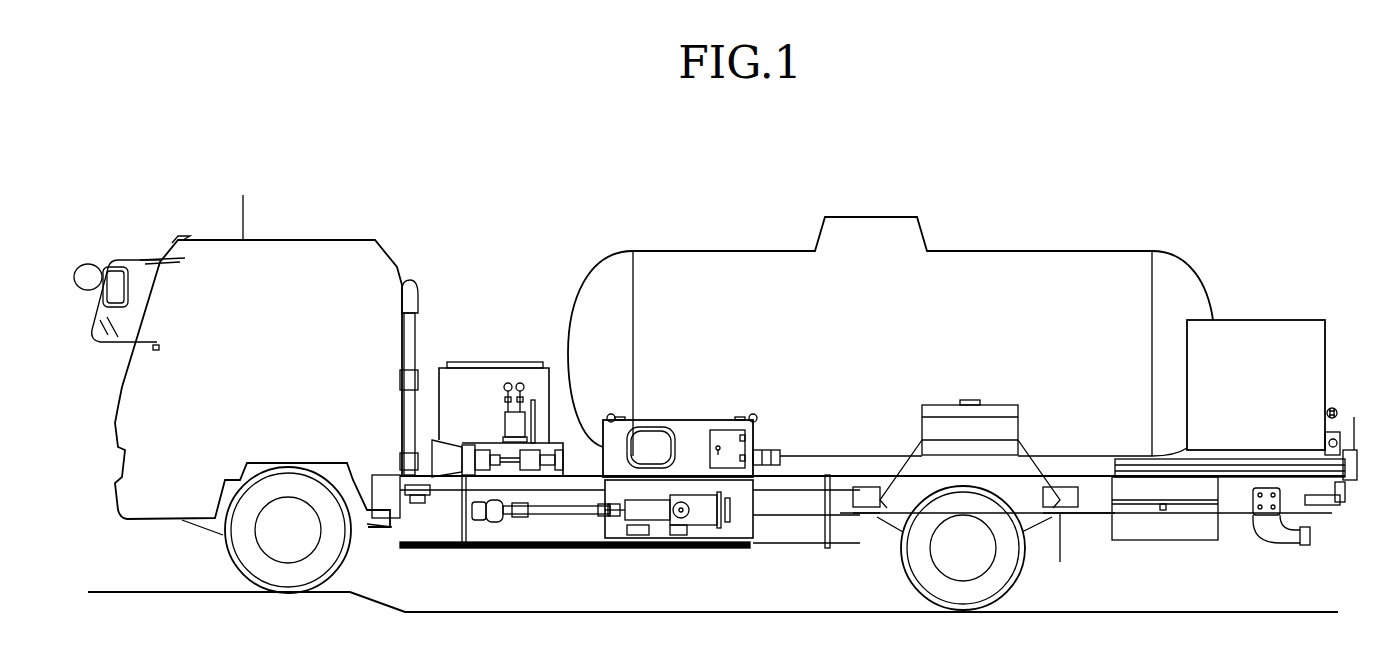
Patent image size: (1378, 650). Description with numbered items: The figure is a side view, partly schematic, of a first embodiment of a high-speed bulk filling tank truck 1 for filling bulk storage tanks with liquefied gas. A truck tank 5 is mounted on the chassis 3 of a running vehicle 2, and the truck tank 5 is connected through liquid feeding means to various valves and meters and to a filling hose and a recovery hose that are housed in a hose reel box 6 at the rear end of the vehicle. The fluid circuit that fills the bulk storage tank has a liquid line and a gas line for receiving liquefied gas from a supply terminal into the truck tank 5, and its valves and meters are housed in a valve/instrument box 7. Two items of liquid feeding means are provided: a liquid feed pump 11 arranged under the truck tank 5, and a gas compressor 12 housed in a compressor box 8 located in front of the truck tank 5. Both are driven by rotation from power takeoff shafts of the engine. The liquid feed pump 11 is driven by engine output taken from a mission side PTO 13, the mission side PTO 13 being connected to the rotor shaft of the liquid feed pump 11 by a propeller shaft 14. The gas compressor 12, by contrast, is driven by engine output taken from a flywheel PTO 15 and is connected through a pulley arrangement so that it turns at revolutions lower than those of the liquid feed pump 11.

The high-speed bulk filling tank truck 1 is at (760, 163).
The running vehicle 2 is at (362, 258).
The chassis 3 is at (1093, 497).
The truck tank 5 is at (990, 275).
The hose reel box 6 is at (1274, 340).
The valve/instrument box 7 is at (693, 425).
The compressor box 8 is at (457, 362).
The liquid feed pump 11 is at (702, 515).
The gas compressor 12 is at (505, 425).
The mission side PTO 13 is at (495, 520).
The propeller shaft 14 is at (557, 513).
The flywheel PTO 15 is at (452, 455).